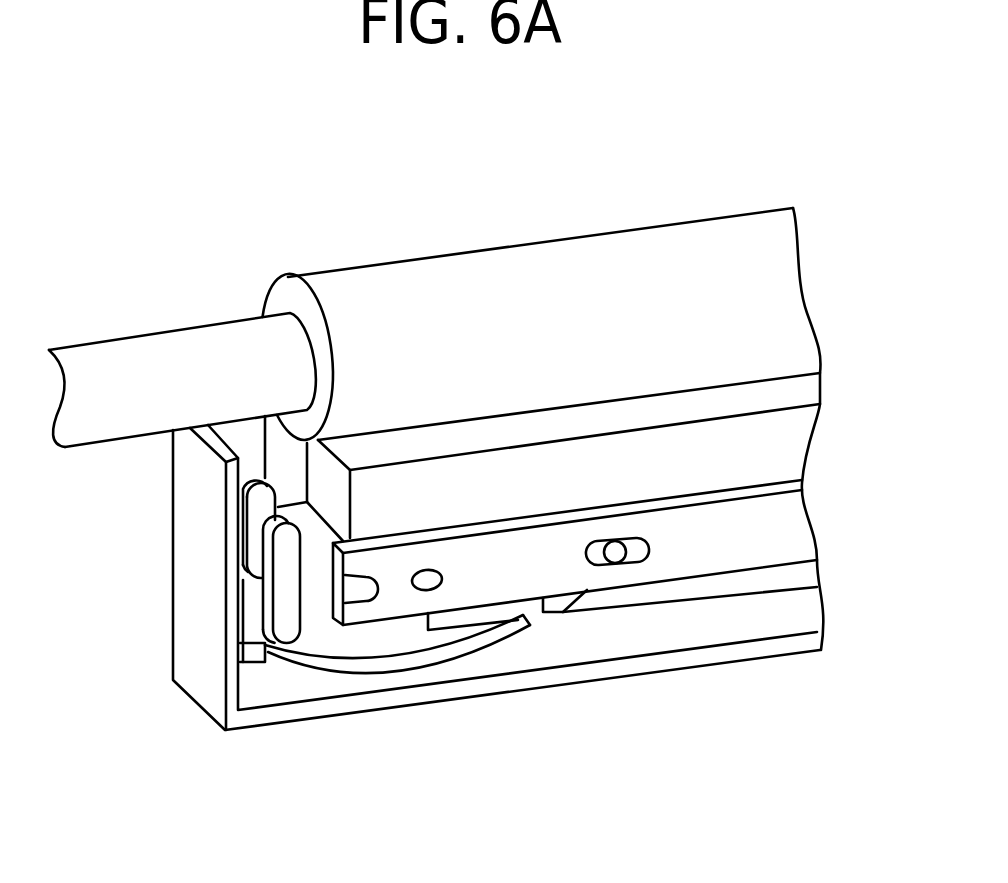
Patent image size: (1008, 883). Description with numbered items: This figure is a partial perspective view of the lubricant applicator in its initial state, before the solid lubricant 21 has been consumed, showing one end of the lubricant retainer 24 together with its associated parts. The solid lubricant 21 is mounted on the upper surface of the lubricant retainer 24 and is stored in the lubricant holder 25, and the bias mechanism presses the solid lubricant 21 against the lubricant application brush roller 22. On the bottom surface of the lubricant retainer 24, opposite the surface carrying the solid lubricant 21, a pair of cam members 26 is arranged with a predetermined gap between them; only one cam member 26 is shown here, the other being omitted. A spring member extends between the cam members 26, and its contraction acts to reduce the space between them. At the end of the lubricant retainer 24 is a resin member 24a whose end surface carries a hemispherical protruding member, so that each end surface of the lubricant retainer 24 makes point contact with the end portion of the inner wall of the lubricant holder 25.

The solid lubricant 21 is at (800, 443).
The lubricant application brush roller 22 is at (545, 257).
The lubricant retainer 24 is at (670, 553).
The resin member 24a is at (253, 600).
The lubricant holder 25 is at (320, 710).
The cam member 26 is at (423, 647).